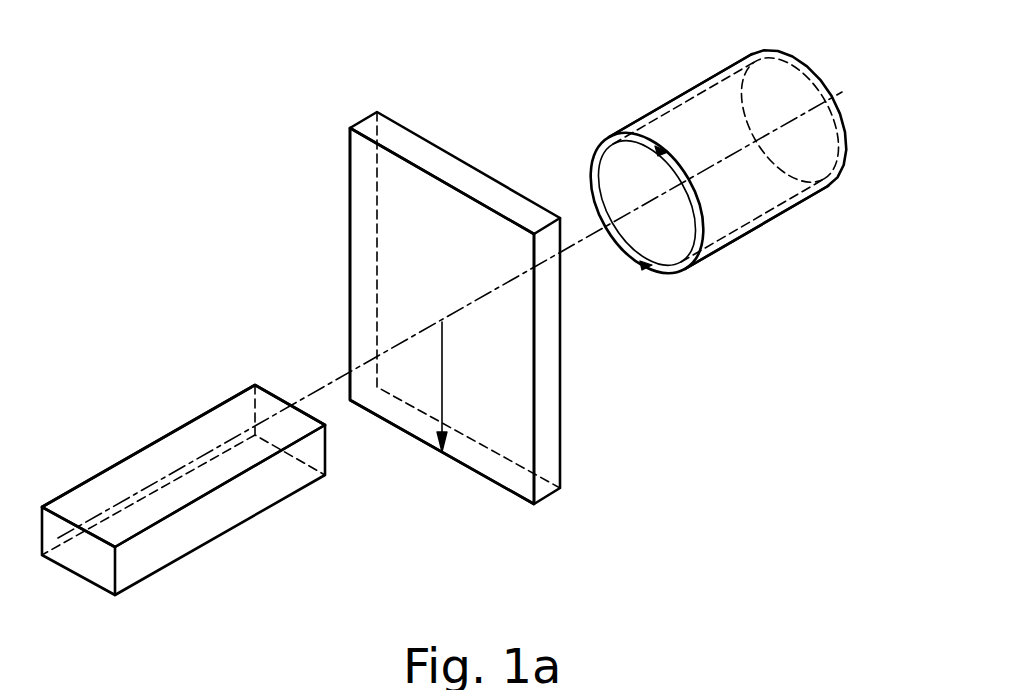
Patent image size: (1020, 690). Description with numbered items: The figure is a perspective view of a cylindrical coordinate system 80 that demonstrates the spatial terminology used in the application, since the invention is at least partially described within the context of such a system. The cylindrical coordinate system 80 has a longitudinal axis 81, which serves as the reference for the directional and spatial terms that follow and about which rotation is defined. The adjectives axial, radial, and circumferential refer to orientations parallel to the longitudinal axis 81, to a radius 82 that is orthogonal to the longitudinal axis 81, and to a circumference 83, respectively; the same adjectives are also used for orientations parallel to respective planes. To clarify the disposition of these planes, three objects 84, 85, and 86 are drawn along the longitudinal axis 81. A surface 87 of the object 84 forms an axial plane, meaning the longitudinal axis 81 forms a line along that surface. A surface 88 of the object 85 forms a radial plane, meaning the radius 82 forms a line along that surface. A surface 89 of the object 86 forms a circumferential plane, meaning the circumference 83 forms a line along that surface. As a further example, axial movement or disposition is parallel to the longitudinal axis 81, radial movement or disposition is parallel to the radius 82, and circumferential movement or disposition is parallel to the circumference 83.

The cylindrical coordinate system 80 is at (297, 168).
The longitudinal axis 81 is at (828, 95).
The radius 82 is at (442, 378).
The circumference 83 is at (588, 162).
The object 84 is at (143, 582).
The object 85 is at (570, 492).
The object 86 is at (748, 240).
The surface 87 is at (138, 470).
The surface 88 is at (365, 262).
The surface 89 is at (680, 93).